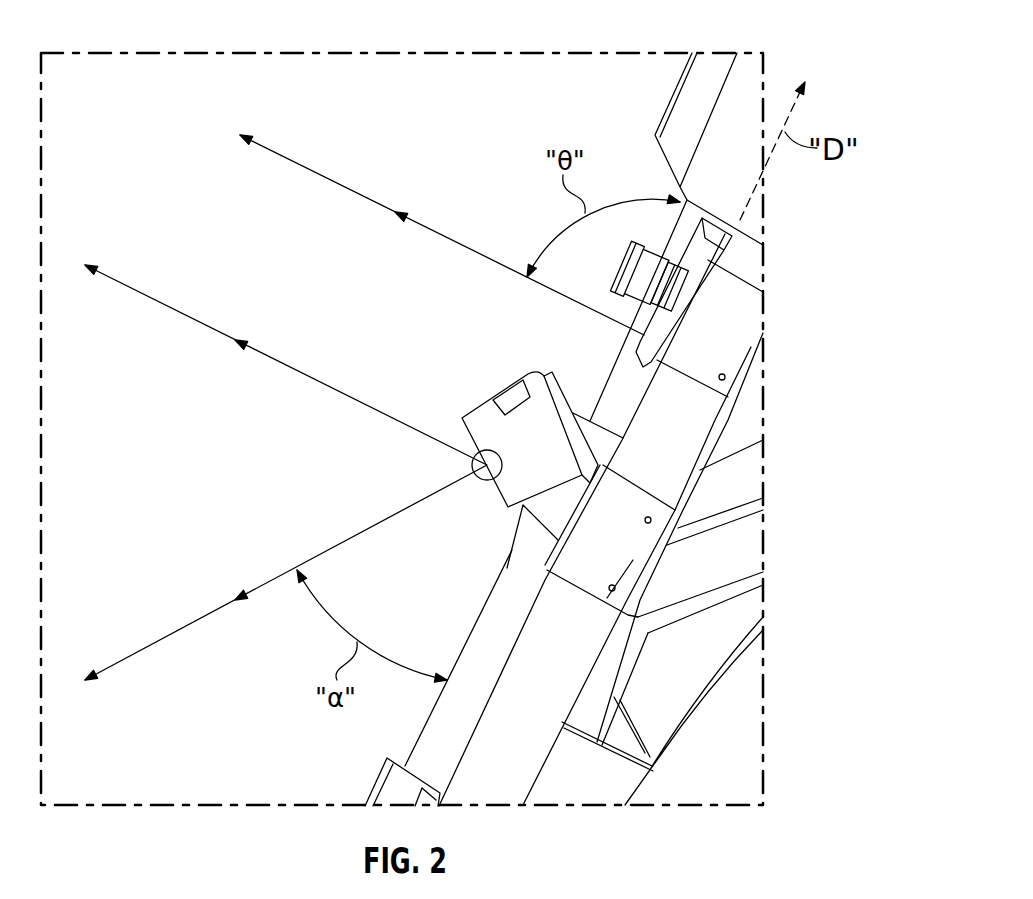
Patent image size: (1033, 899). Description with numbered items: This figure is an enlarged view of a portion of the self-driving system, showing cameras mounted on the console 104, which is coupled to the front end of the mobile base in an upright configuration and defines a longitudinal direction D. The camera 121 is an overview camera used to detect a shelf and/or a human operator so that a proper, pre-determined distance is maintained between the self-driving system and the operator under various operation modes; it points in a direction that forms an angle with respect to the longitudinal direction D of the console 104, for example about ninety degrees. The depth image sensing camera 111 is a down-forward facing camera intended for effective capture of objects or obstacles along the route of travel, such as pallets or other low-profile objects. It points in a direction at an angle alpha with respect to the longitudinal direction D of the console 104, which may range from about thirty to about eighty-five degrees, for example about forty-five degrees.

The console 104 is at (742, 487).
The depth image sensing camera 111 is at (508, 497).
The camera 121 is at (620, 290).